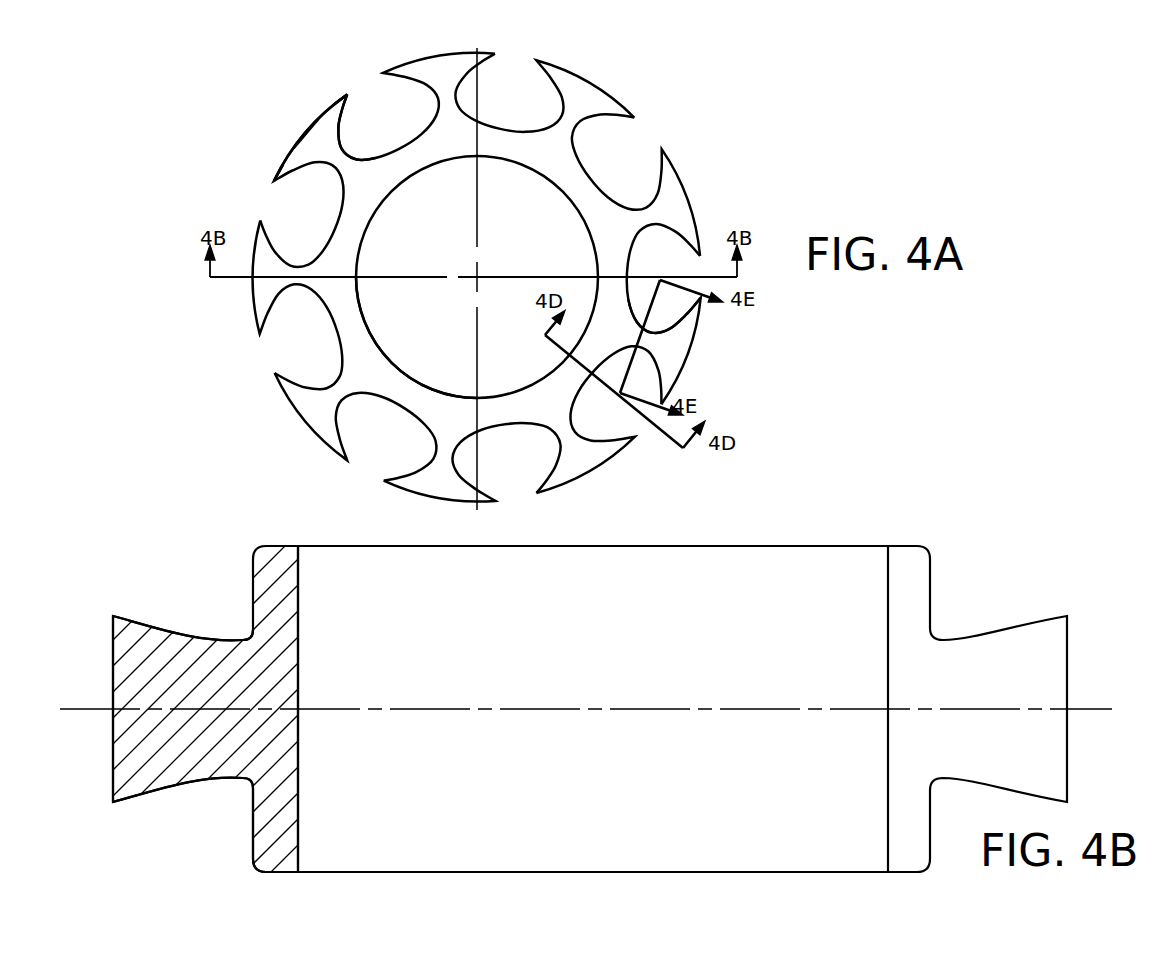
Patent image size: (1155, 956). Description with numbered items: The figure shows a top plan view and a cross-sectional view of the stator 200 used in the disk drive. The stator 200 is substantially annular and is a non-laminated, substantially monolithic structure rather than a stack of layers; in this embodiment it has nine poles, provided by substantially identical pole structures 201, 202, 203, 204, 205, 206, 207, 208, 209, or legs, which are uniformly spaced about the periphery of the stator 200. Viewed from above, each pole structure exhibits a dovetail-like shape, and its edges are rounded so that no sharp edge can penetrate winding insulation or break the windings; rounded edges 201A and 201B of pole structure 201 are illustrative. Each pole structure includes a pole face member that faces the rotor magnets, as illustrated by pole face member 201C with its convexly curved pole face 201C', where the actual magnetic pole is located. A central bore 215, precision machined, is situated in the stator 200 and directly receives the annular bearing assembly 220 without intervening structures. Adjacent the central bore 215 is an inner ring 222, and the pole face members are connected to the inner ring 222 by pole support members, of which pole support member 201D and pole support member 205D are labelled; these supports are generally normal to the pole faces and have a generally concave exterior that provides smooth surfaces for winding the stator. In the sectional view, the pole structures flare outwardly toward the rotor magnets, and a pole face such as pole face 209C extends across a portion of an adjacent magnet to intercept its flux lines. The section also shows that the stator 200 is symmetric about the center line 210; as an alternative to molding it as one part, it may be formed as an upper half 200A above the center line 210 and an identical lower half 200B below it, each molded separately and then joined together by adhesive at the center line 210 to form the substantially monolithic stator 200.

In FIG. 4A, the stator 200 is at (744, 116).
In FIG. 4B, the stator 200 is at (1016, 582).
In FIG. 4B, the upper half 200A is at (210, 660).
In FIG. 4B, the lower half 200B is at (215, 767).
In FIG. 4A, the pole structure 201 is at (281, 146).
In FIG. 4A, the rounded edge 201A is at (272, 182).
In FIG. 4A, the rounded edge 201B is at (313, 130).
In FIG. 4A, the pole face member 201C is at (289, 133).
In FIG. 4A, the pole face 201C' is at (279, 101).
In FIG. 4A, the pole support member 201D is at (338, 157).
In FIG. 4A, the pole structure 202 is at (441, 56).
In FIG. 4A, the pole structure 203 is at (597, 83).
In FIG. 4A, the pole structure 204 is at (693, 203).
In FIG. 4B, the pole structure 204 is at (1070, 672).
In FIG. 4A, the pole structure 205 is at (690, 347).
In FIG. 4A, the pole support member 205D is at (633, 333).
In FIG. 4A, the pole structure 206 is at (584, 481).
In FIG. 4A, the pole structure 207 is at (434, 500).
In FIG. 4A, the pole structure 208 is at (302, 422).
In FIG. 4A, the pole structure 209 is at (250, 300).
In FIG. 4B, the pole structure 209 is at (127, 748).
In FIG. 4B, the pole face 209C is at (112, 672).
In FIG. 4B, the center line 210 is at (488, 707).
In FIG. 4A, the central bore 215 is at (368, 333).
In FIG. 4B, the central bore 215 is at (300, 607).
In FIG. 4B, the bearing assembly 220 is at (748, 560).
In FIG. 4A, the inner ring 222 is at (360, 231).
In FIG. 4B, the inner ring 222 is at (257, 858).